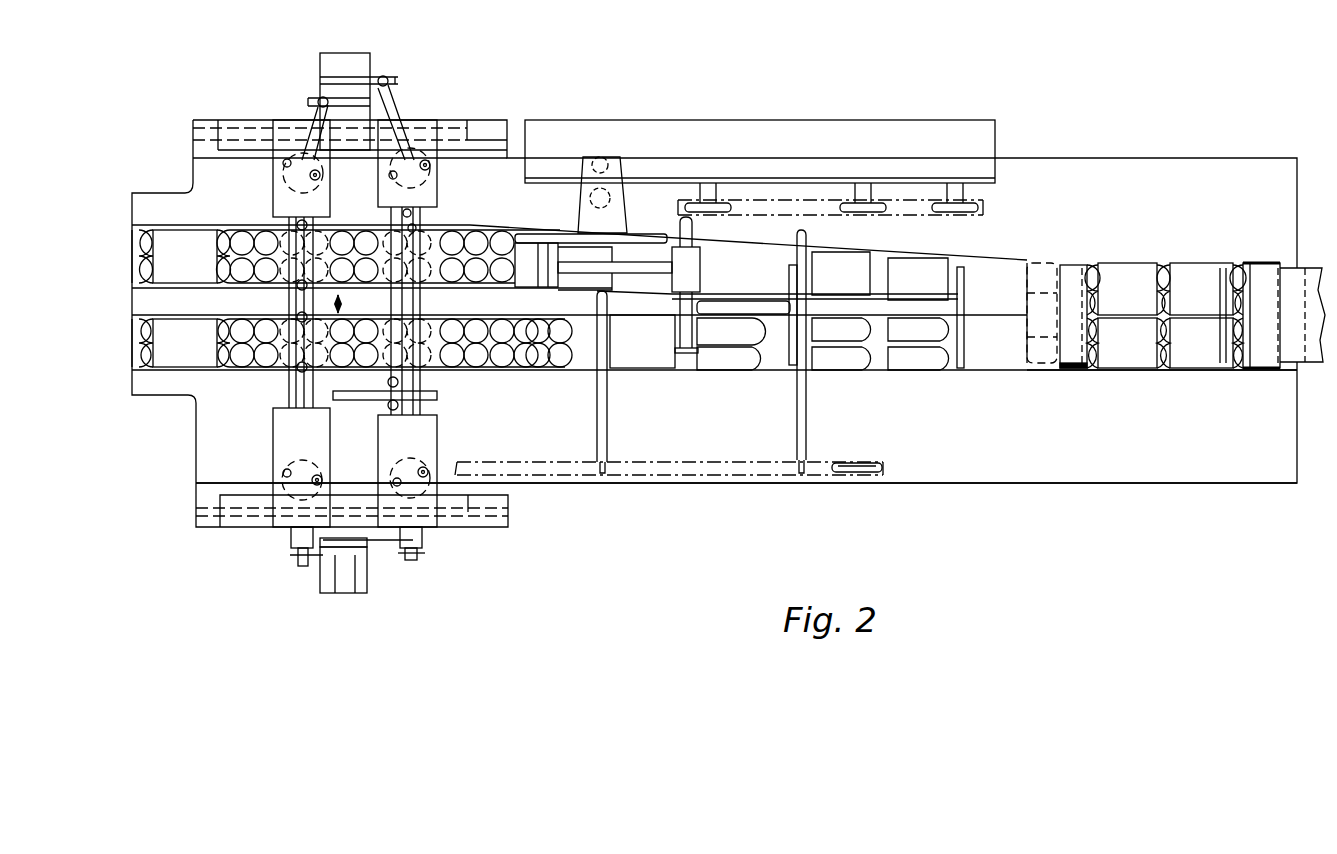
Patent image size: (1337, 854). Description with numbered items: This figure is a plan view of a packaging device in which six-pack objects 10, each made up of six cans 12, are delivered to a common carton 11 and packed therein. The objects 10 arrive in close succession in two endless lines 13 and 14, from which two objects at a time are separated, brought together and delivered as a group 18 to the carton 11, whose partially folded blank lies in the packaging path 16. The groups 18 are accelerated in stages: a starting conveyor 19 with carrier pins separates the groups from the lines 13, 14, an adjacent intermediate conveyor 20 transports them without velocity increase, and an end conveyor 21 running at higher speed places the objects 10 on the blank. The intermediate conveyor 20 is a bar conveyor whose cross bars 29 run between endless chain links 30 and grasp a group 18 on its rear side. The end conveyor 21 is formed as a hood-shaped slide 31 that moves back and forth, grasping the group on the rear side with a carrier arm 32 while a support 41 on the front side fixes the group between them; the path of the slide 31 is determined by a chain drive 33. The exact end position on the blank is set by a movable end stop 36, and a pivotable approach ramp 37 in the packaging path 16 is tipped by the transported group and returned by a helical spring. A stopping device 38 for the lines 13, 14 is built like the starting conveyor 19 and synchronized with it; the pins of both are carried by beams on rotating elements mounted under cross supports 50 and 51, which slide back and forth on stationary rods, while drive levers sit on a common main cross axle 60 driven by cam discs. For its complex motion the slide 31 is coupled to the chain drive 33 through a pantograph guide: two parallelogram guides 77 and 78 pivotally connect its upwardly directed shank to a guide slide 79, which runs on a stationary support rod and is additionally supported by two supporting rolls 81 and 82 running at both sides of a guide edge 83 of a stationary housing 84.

The objects 10 is at (181, 298).
The carton 11 is at (1194, 258).
The cans 12 is at (474, 368).
The line 13 is at (162, 216).
The line 14 is at (167, 378).
The packaging path 16 is at (1142, 400).
The group 18 is at (1143, 258).
The starting conveyor 19 is at (421, 117).
The intermediate conveyor 20 is at (626, 480).
The end conveyor 21 is at (922, 374).
The cross bars 29 is at (608, 400).
The endless chain links 30 is at (737, 470).
The slide 31 is at (776, 356).
The carrier arm 32 is at (800, 375).
The chain drive 33 is at (930, 222).
The end stop 36 is at (1290, 355).
The approach ramp 37 is at (1040, 282).
The stopping device 38 is at (287, 117).
The support 41 is at (964, 345).
The cross support 50 is at (275, 527).
The cross support 51 is at (438, 527).
The main cross axle 60 is at (350, 585).
The parallelogram guide 77 is at (585, 270).
The parallelogram guide 78 is at (686, 285).
The guide slide 79 is at (618, 228).
The supporting roll 81 is at (600, 158).
The supporting roll 82 is at (592, 196).
The guide edge 83 is at (780, 186).
The housing 84 is at (958, 130).